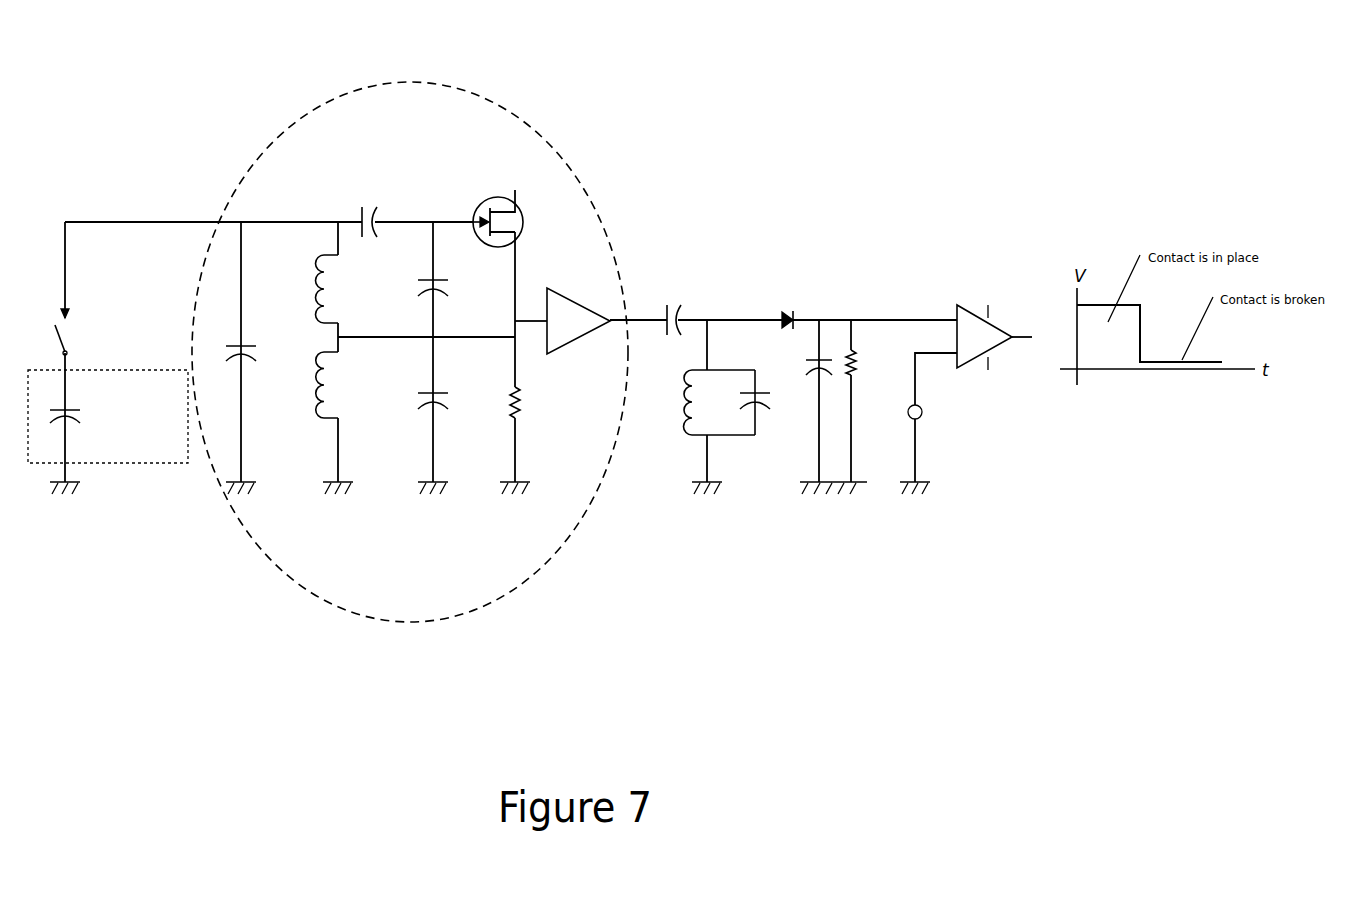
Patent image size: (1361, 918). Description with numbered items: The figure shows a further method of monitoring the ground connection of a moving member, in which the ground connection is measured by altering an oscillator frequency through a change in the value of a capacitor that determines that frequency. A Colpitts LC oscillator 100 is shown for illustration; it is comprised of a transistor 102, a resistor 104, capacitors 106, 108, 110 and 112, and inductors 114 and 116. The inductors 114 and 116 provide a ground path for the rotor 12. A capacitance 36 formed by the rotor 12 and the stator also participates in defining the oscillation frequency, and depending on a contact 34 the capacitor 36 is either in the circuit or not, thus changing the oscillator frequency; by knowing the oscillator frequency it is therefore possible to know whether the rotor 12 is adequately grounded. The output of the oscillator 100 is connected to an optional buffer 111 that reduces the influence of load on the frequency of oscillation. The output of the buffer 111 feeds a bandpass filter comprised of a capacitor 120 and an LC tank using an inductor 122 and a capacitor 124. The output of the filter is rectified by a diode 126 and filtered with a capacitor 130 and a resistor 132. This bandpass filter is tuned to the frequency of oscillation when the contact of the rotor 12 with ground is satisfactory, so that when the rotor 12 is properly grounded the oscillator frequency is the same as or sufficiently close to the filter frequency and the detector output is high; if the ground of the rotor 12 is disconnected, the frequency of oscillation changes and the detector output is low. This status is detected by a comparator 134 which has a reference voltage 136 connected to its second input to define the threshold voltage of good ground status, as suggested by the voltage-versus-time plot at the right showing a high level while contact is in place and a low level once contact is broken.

The Collpitz LC oscillator 100 is at (405, 82).
The contact 34 is at (72, 337).
The rotor 12 is at (107, 368).
The capacitor 36 is at (83, 433).
The capacitor 112 is at (258, 370).
The inductor 114 is at (338, 307).
The inductor 116 is at (328, 400).
The capacitor 108 is at (422, 297).
The capacitor 110 is at (418, 407).
The capacitor 106 is at (370, 207).
The transistor 102 is at (482, 202).
The resistor 104 is at (530, 418).
The buffer 111 is at (563, 287).
The capacitor 120 is at (692, 303).
The inductor 122 is at (675, 420).
The capacitor 124 is at (755, 435).
The diode 126 is at (793, 320).
The capacitor 130 is at (819, 392).
The resistor 132 is at (851, 378).
The reference voltage 136 is at (922, 415).
The comparator 134 is at (985, 310).